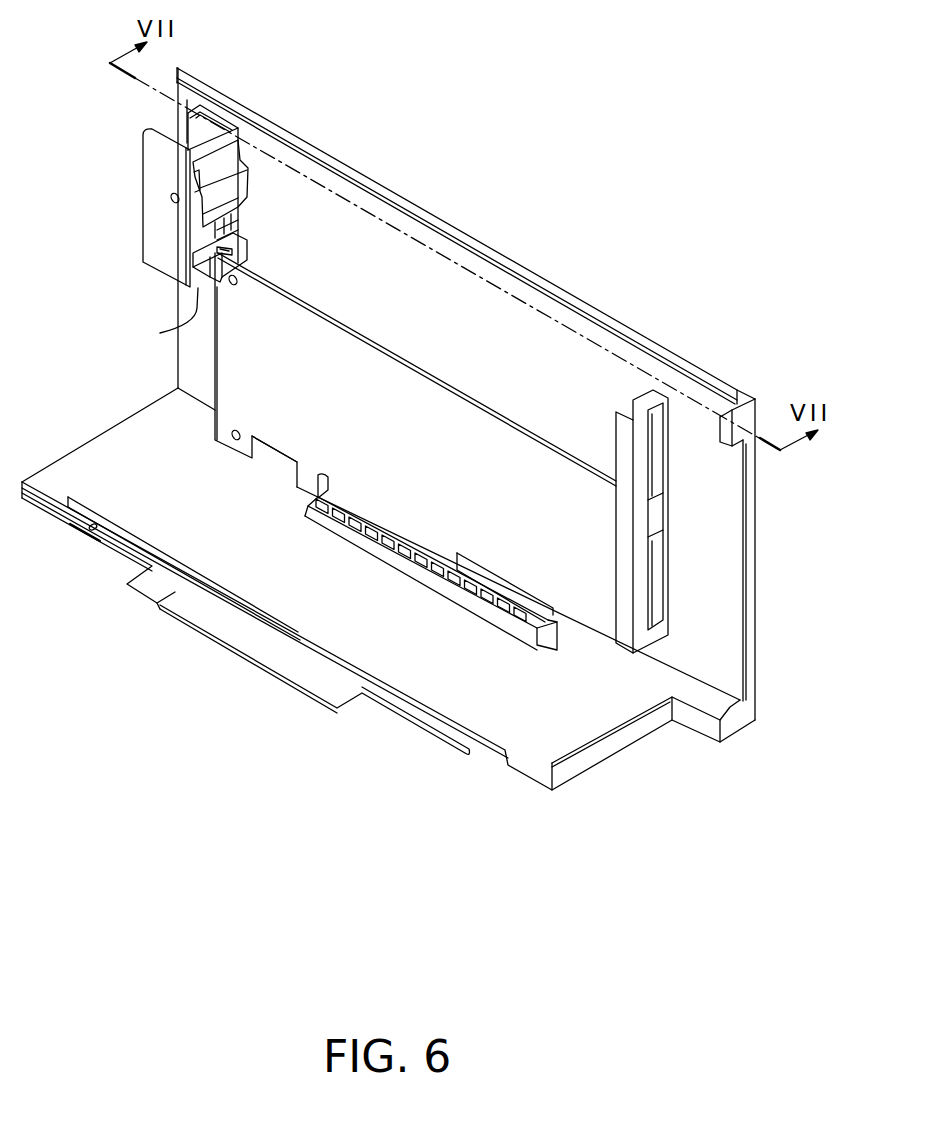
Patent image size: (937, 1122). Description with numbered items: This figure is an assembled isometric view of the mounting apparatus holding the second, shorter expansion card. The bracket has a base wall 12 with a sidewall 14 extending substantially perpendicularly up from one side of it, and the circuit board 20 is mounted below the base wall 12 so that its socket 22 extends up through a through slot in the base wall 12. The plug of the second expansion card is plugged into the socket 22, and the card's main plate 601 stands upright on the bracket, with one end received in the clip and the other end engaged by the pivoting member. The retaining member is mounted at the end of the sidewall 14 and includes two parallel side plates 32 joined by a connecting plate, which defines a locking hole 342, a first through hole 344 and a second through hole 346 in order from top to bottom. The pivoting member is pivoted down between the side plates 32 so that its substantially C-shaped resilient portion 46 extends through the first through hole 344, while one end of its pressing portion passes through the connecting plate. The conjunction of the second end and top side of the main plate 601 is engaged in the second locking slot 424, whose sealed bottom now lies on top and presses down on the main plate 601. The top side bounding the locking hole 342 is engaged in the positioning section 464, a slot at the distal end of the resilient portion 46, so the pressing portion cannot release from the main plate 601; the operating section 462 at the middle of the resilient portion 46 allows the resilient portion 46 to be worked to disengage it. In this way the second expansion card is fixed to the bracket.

The base wall 12 is at (482, 698).
The sidewall 14 is at (693, 568).
The circuit board 20 is at (262, 632).
The socket 22 is at (413, 570).
The side plate 32 is at (162, 233).
The locking hole 342 is at (198, 182).
The first through hole 344 is at (221, 256).
The second through hole 346 is at (160, 334).
The second locking slot 424 is at (232, 250).
The resilient portion 46 is at (343, 58).
The operating section 462 is at (247, 178).
The positioning section 464 is at (223, 143).
The main plate 601 is at (365, 405).